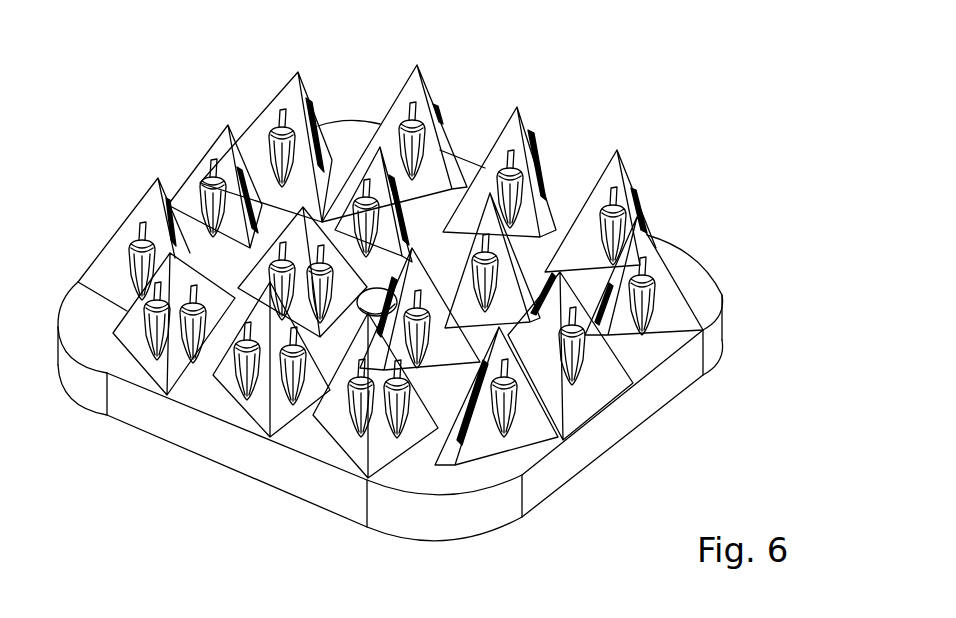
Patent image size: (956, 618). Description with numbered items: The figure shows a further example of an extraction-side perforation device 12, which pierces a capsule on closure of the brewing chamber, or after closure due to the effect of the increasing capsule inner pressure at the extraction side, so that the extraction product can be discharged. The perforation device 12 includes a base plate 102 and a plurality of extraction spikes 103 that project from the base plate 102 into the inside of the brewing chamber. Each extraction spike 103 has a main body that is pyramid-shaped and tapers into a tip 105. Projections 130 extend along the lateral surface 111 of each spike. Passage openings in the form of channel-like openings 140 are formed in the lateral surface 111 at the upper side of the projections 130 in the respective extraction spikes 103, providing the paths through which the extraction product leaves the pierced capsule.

The extraction-side perforation device 12 is at (201, 103).
The base plate 102 is at (634, 405).
The extraction spike 103 is at (614, 178).
The tip 105 is at (418, 66).
The lateral surface 111 is at (412, 420).
The projection 130 is at (137, 237).
The channel-like opening 140 is at (258, 352).